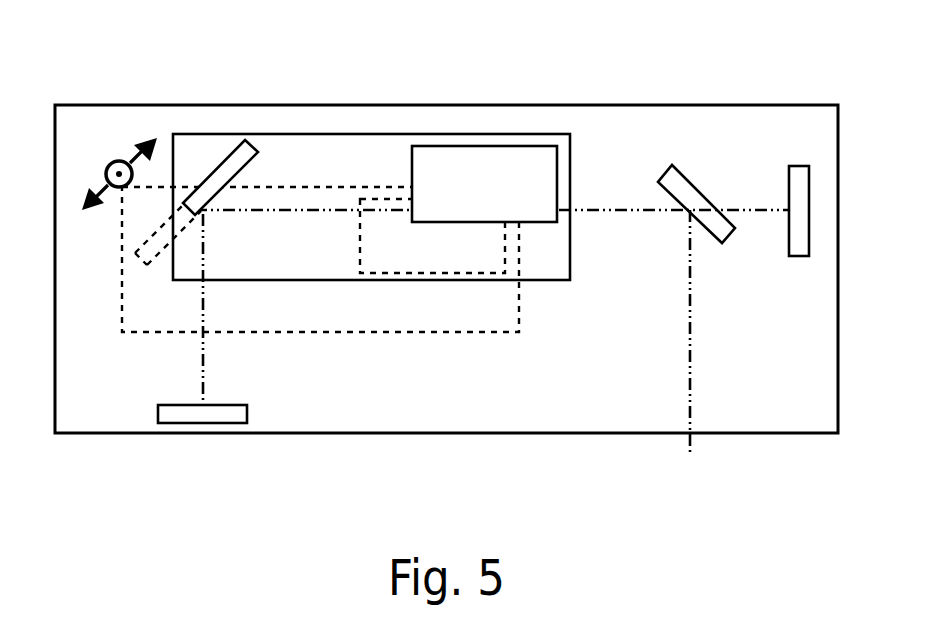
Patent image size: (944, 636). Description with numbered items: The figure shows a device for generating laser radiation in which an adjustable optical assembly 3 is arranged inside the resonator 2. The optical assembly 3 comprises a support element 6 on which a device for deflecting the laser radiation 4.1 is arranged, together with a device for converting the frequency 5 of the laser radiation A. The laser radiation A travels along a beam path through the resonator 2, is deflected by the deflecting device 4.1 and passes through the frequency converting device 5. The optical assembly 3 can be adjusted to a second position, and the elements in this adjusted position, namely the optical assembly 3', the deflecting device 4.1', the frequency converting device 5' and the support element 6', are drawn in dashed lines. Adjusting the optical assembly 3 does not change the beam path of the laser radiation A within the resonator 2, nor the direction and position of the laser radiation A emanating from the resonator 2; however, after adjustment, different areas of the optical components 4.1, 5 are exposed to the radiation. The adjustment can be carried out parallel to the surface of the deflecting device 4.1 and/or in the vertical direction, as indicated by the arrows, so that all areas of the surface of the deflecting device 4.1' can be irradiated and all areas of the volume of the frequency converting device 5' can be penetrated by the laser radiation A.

The resonator 2 is at (446, 222).
The optical assembly 3 is at (400, 232).
The optical assembly after adjustment 3' is at (328, 284).
The device for deflecting the laser radiation 4.1 is at (207, 176).
The device for deflecting the laser radiation after adjustment 4.1' is at (168, 263).
The device for converting the frequency of the laser radiation 5 is at (453, 181).
The device for converting the frequency after adjustment 5' is at (327, 248).
The support element 6 is at (439, 251).
The support element after adjustment 6' is at (432, 262).
The laser radiation A is at (570, 210).